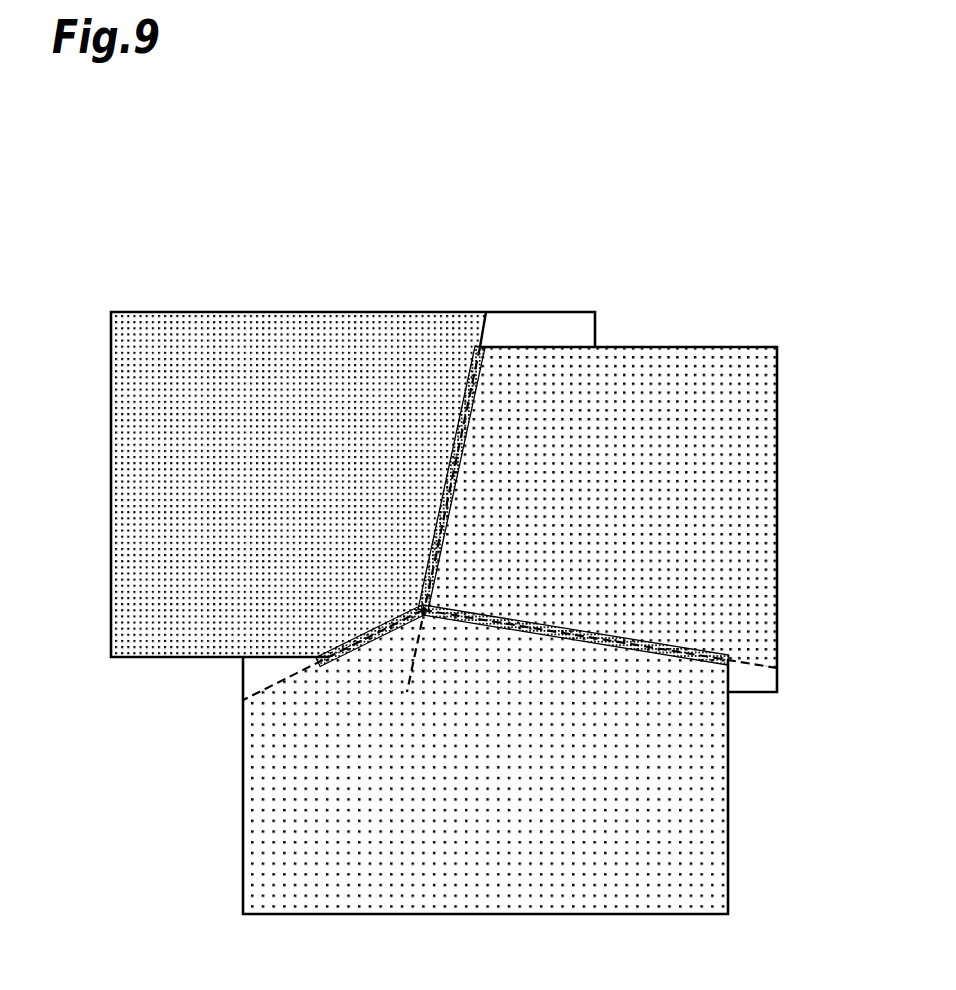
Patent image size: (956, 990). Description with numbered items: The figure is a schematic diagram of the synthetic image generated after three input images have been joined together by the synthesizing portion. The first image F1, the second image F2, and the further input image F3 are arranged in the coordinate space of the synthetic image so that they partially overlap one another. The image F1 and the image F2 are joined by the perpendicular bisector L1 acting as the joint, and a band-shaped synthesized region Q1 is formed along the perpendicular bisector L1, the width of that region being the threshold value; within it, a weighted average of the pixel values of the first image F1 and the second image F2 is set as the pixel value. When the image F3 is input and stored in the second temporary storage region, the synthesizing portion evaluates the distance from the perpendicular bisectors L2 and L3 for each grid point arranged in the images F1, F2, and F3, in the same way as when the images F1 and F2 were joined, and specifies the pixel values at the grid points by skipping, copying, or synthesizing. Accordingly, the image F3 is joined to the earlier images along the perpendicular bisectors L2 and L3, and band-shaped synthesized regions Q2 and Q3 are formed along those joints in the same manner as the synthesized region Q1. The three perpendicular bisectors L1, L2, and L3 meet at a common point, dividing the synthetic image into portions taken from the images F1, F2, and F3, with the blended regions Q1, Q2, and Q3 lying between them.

The first image F1 is at (522, 312).
The second image F2 is at (718, 347).
The image F3 is at (650, 914).
The perpendicular bisector L1 is at (480, 343).
The perpendicular bisector L2 is at (255, 700).
The perpendicular bisector L3 is at (755, 668).
The synthesized region Q1 is at (465, 390).
The synthesized region Q2 is at (335, 667).
The synthesized region Q3 is at (652, 655).